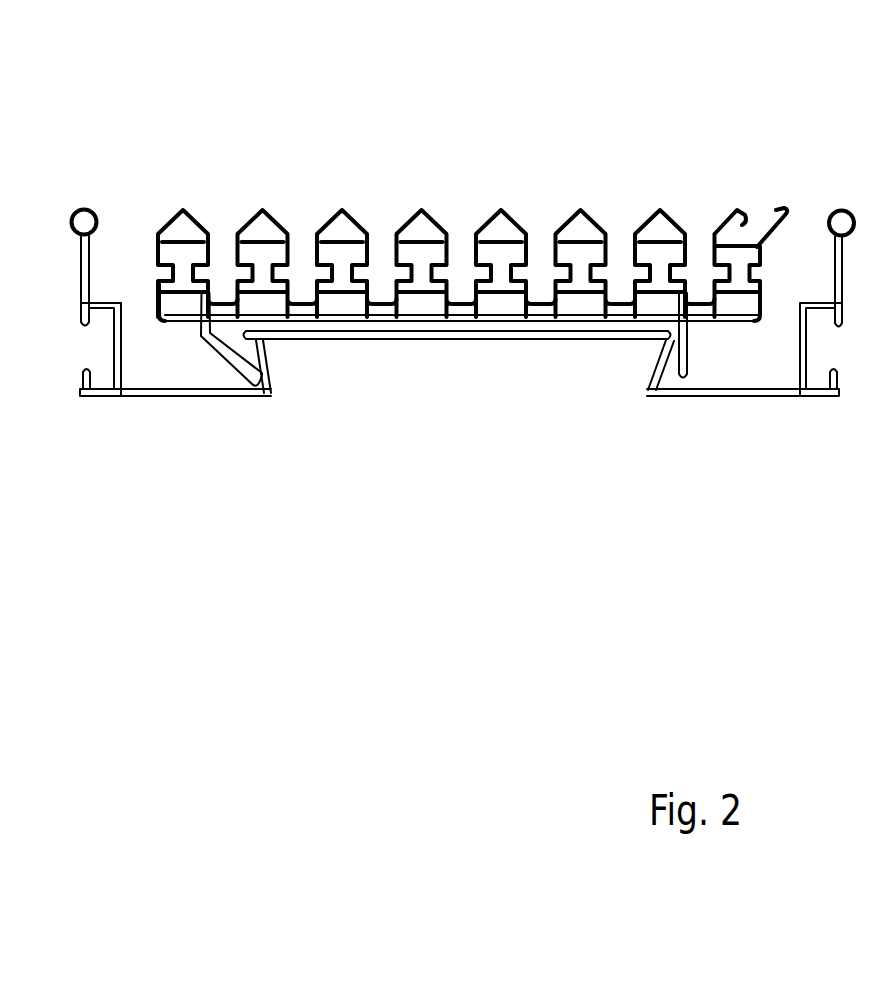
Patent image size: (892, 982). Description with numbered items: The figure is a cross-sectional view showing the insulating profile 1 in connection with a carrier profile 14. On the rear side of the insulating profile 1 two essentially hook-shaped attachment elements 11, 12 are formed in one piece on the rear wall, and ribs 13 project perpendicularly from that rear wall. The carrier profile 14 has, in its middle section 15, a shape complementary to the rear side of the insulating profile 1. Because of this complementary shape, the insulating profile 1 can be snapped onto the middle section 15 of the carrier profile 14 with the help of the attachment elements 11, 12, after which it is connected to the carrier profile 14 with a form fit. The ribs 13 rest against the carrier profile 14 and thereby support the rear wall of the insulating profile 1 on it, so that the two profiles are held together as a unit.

The insulating profile 1 is at (480, 156).
The attachment element 11 is at (224, 356).
The attachment element 12 is at (684, 357).
The ribs 13 is at (421, 330).
The carrier profile 14 is at (148, 432).
The middle section 15 is at (657, 363).